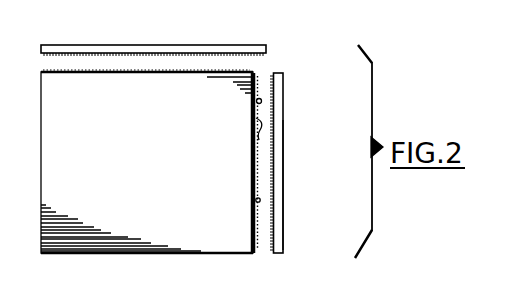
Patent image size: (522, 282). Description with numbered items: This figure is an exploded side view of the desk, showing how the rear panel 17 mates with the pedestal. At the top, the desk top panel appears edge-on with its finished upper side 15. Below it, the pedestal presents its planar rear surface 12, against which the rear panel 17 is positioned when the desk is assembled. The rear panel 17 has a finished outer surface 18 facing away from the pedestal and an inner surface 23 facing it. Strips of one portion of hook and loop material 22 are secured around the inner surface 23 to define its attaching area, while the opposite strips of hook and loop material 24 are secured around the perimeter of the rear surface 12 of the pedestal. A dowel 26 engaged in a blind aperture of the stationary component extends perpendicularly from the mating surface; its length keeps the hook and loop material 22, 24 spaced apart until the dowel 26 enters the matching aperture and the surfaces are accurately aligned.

The planar rear surface 12 is at (251, 244).
The upper side 15 is at (187, 45).
The rear panel 17 is at (287, 98).
The outer surface 18 is at (283, 192).
The hook and loop material 22 is at (272, 169).
The inner surface 23 is at (272, 200).
The hook and loop material 24 is at (254, 146).
The dowel 26 is at (251, 98).